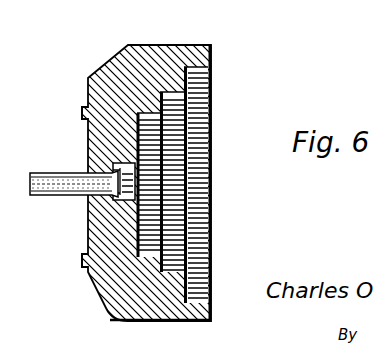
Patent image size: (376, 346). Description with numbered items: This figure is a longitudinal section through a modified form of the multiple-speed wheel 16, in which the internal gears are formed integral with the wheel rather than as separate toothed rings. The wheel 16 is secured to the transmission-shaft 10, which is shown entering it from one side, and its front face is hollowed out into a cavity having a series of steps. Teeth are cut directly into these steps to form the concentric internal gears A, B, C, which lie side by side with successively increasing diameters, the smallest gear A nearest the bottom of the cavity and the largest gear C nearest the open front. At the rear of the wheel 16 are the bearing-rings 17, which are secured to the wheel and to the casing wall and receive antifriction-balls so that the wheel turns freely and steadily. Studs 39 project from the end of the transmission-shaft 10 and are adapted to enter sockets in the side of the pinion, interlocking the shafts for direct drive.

The multiple-speed wheel 16 is at (107, 60).
The bearing-rings 17 is at (80, 109).
The transmission-shaft 10 is at (52, 178).
The studs 39 is at (120, 203).
The internal gear A is at (144, 112).
The internal gear B is at (175, 91).
The internal gear C is at (202, 66).